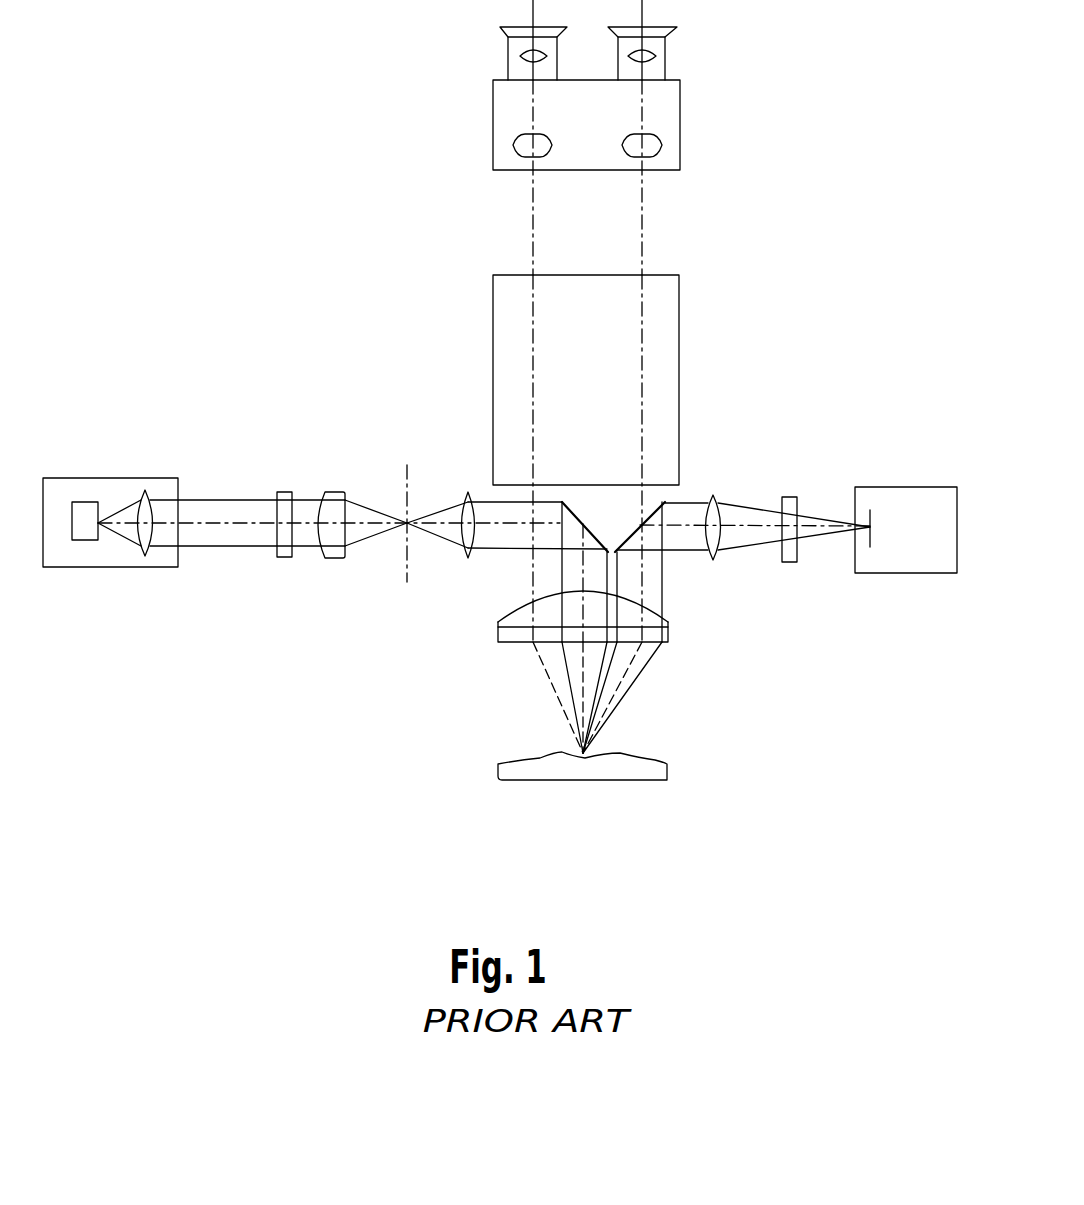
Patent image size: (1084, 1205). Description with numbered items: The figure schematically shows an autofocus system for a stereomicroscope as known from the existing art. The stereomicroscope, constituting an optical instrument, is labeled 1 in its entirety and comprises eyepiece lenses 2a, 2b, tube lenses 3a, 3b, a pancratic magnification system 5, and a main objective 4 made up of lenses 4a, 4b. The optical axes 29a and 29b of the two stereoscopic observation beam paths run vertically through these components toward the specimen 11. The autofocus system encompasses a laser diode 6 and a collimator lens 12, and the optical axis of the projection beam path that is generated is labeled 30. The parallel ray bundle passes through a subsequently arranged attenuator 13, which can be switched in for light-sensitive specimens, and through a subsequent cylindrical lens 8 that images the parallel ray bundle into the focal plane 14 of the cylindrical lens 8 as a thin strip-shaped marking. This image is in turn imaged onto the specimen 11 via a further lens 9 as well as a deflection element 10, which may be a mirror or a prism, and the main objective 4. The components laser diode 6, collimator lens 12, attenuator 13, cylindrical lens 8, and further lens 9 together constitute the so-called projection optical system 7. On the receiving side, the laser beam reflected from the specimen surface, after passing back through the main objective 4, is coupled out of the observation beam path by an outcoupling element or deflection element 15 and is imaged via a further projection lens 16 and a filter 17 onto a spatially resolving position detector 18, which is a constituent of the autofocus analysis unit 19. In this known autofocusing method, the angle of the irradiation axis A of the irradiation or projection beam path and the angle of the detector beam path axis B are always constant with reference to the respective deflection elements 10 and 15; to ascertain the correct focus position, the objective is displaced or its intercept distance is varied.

The stereomicroscope 1 is at (455, 312).
The eyepiece lens 2a is at (520, 56).
The eyepiece lens 2b is at (666, 56).
The tube lens 3a is at (515, 145).
The tube lens 3b is at (662, 145).
The optical axis 29a is at (532, 207).
The optical axis 29b is at (642, 209).
The pancratic magnification system 5 is at (661, 326).
The projection optical system 7 is at (212, 408).
The laser diode 6 is at (85, 532).
The collimator lens 12 is at (143, 495).
The optical axis of the projection beam path 30 is at (223, 525).
The attenuator 13 is at (285, 492).
The cylindrical lens 8 is at (335, 492).
The focal plane 14 is at (398, 488).
The further lens 9 is at (462, 490).
The deflection element 10 is at (573, 512).
The deflection element 15 is at (655, 512).
The projection lens 16 is at (715, 498).
The filter 17 is at (790, 498).
The autofocus analysis unit 19 is at (907, 500).
The position detector 18 is at (872, 540).
The main objective 4 is at (510, 631).
The lens 4a is at (508, 620).
The lens 4b is at (503, 645).
The irradiation axis A is at (583, 675).
The detector beam path axis B is at (615, 690).
The specimen 11 is at (657, 768).